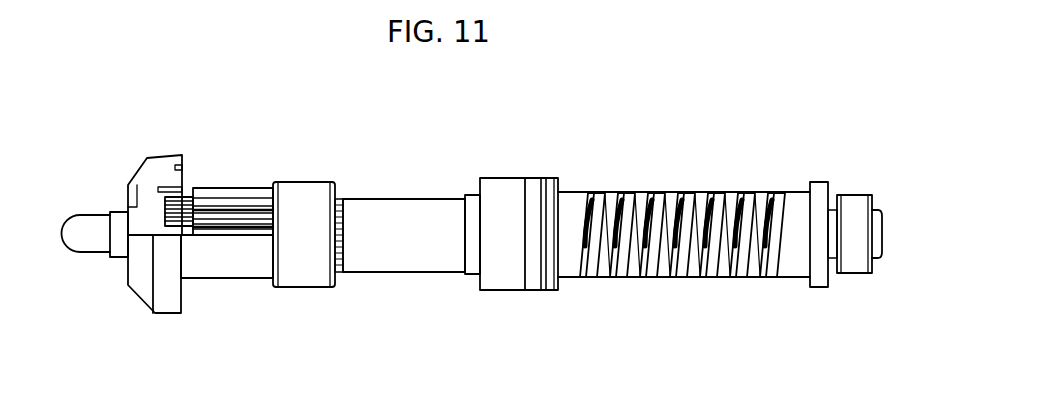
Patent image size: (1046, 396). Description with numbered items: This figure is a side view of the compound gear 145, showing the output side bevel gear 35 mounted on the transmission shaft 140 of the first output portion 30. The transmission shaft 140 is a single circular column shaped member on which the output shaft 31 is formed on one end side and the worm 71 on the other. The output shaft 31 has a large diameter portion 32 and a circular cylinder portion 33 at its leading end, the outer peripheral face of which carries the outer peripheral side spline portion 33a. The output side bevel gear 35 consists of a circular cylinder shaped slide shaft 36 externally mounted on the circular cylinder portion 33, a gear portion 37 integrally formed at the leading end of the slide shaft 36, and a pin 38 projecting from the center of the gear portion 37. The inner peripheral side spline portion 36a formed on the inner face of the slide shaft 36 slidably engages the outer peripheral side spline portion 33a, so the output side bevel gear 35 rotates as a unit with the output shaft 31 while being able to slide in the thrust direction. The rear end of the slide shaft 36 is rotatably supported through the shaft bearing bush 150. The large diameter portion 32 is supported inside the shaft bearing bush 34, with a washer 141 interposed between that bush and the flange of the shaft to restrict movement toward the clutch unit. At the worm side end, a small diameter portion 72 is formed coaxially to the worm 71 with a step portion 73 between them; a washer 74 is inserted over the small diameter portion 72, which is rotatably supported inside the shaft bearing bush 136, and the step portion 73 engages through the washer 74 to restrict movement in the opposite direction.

The output portion 30 is at (336, 246).
The output shaft 31 is at (395, 239).
The large diameter portion 32 is at (440, 234).
The circular cylinder portion 33 is at (387, 198).
The outer peripheral side spline portion 33a is at (252, 213).
The shaft bearing bush 34 is at (519, 237).
The output side bevel gear 35 is at (203, 277).
The slide shaft 36 is at (253, 260).
The inner peripheral side spline portion 36a is at (180, 210).
The gear portion 37 is at (140, 280).
The pin 38 is at (65, 230).
The worm 71 is at (660, 192).
The small diameter portion 72 is at (880, 252).
The step portion 73 is at (812, 222).
The washer 74 is at (823, 182).
The shaft bearing bush 136 is at (857, 195).
The transmission shaft 140 is at (433, 272).
The washer 141 is at (535, 290).
The compound gear 145 is at (361, 233).
The shaft bearing bush 150 is at (310, 182).